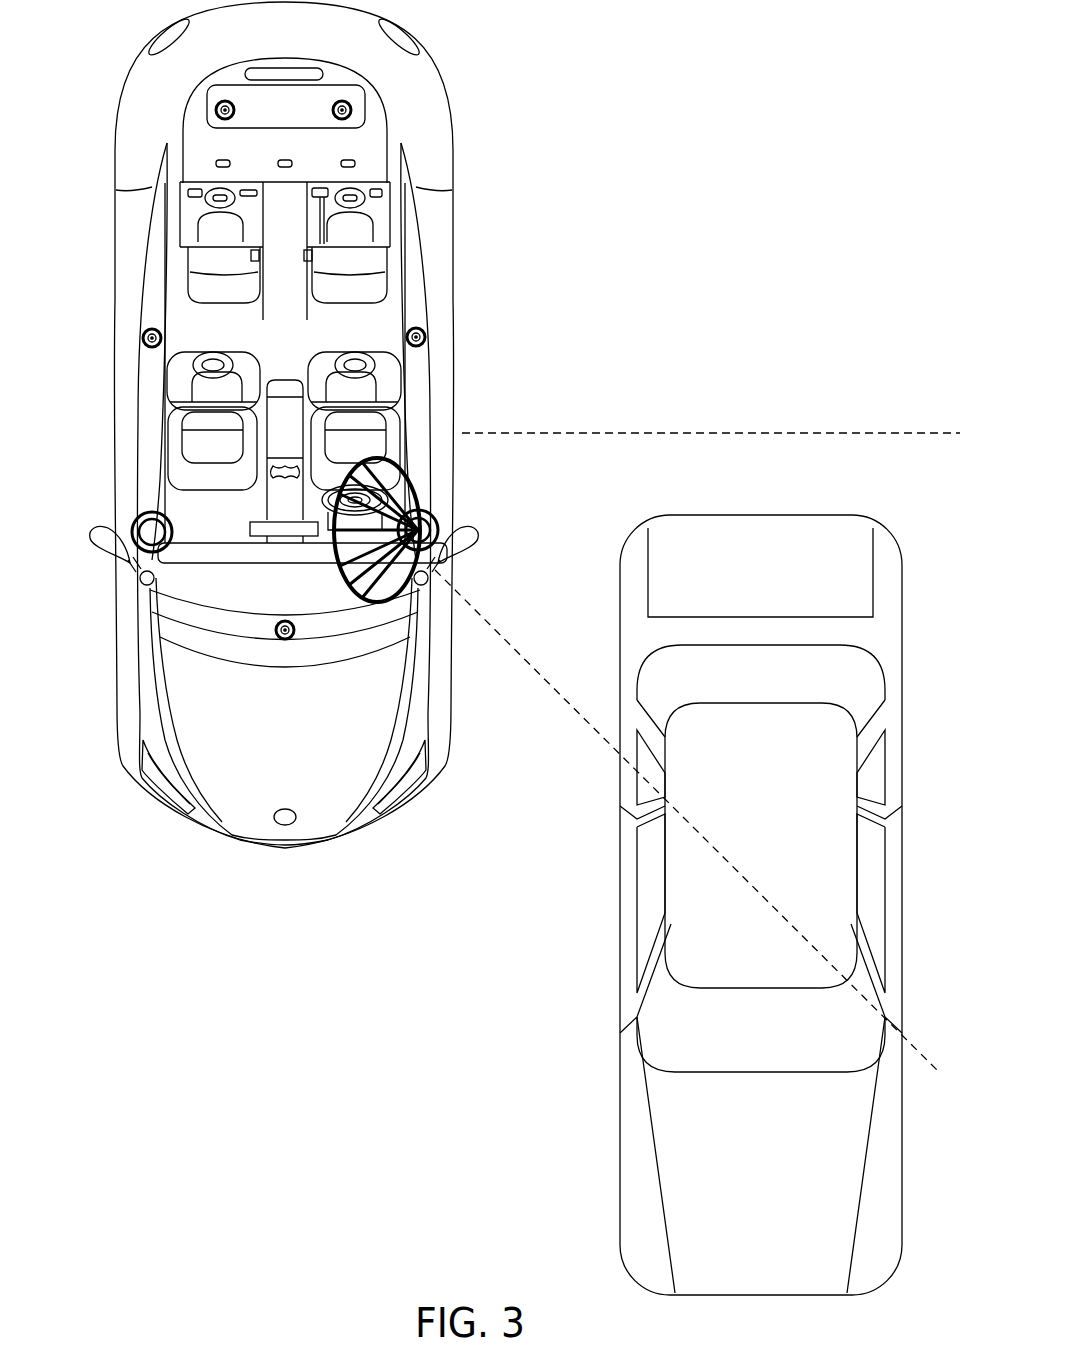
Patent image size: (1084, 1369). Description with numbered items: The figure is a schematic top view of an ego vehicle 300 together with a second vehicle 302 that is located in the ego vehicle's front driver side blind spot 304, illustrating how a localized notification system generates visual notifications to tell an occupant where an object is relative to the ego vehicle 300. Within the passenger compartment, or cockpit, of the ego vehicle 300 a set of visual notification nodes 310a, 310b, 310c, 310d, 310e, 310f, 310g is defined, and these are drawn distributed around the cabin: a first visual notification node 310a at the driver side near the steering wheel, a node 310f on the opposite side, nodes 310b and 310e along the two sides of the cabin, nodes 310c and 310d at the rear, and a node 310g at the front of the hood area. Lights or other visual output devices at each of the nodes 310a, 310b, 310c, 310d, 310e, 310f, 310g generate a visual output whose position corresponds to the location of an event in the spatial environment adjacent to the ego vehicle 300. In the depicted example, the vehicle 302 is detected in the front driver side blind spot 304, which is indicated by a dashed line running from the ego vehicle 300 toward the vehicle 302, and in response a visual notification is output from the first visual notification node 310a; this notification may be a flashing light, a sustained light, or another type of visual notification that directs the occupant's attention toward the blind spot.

The ego vehicle 300 is at (300, 770).
The vehicle 302 is at (773, 581).
The front driver side blind spot 304 is at (840, 483).
The first visual notification node 310a is at (438, 528).
The visual notification node 310b is at (424, 335).
The visual notification node 310c is at (350, 110).
The visual notification node 310d is at (235, 110).
The visual notification node 310e is at (144, 334).
The visual notification node 310f is at (132, 524).
The visual notification node 310g is at (289, 640).